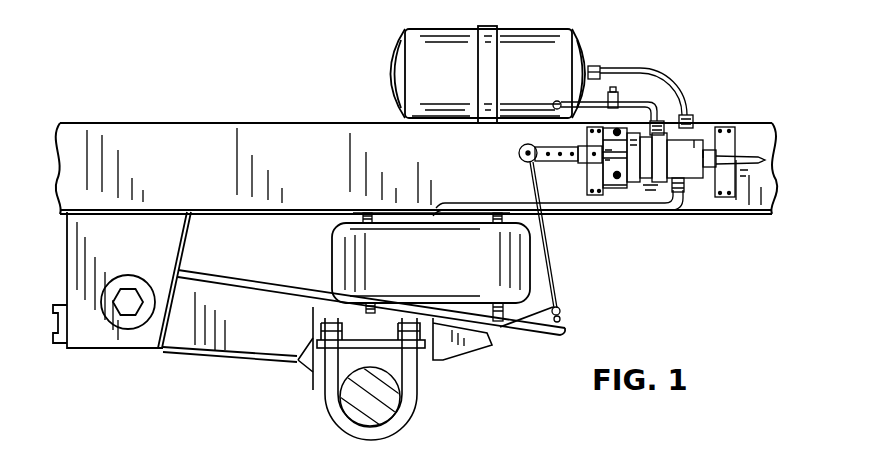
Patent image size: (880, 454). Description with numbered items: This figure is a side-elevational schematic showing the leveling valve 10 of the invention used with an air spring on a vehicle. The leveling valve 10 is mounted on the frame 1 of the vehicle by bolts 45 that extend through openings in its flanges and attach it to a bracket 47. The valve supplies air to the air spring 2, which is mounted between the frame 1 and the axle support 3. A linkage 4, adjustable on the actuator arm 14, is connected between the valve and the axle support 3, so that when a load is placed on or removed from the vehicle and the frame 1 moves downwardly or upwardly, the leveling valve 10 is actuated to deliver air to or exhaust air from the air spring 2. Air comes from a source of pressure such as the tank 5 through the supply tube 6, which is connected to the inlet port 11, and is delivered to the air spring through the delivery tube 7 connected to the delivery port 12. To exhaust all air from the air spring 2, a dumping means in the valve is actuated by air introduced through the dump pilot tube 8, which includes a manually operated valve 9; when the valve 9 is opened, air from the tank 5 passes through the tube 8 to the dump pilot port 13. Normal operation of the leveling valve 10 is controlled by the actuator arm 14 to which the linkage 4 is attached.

The frame 1 is at (768, 138).
The air spring 2 is at (337, 262).
The axle support 3 is at (462, 338).
The linkage 4 is at (552, 272).
The tank 5 is at (584, 60).
The supply tube 6 is at (663, 72).
The delivery tube 7 is at (602, 208).
The dump pilot tube 8 is at (627, 101).
The manually operated valve 9 is at (613, 88).
The leveling valve 10 is at (693, 173).
The inlet port 11 is at (694, 137).
The delivery port 12 is at (668, 203).
The dump pilot port 13 is at (686, 113).
The actuator arm 14 is at (567, 163).
The bolts 45 is at (619, 178).
The bracket 47 is at (714, 146).